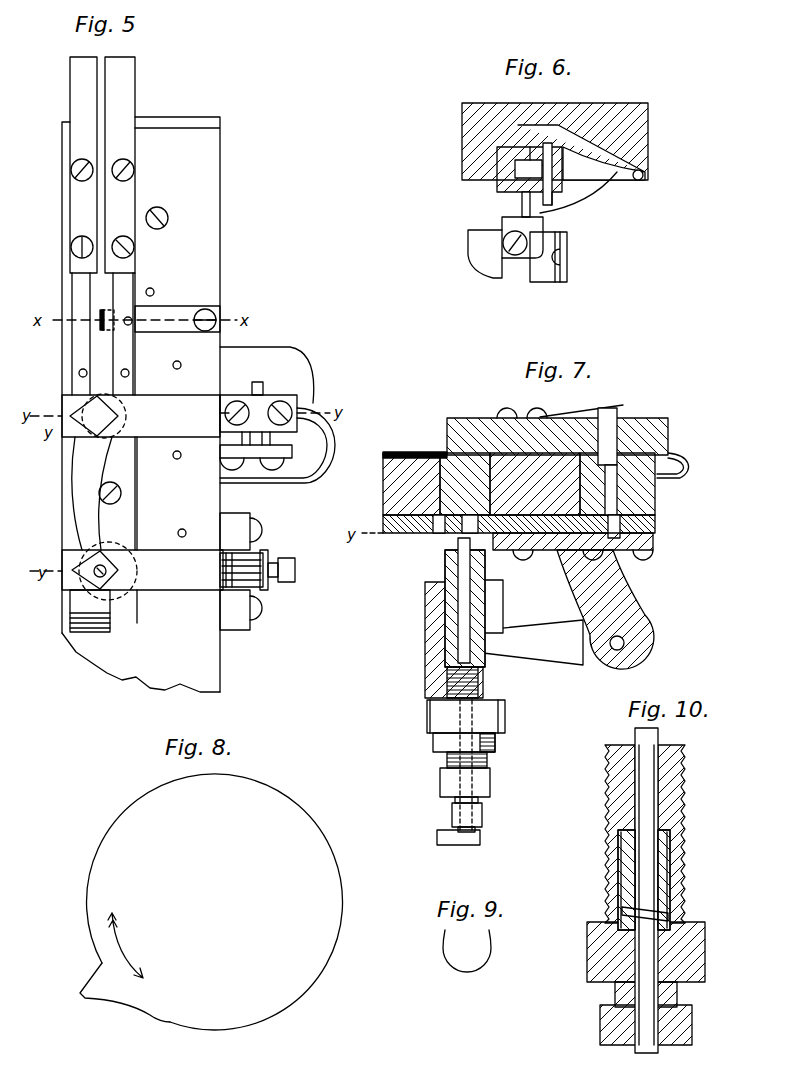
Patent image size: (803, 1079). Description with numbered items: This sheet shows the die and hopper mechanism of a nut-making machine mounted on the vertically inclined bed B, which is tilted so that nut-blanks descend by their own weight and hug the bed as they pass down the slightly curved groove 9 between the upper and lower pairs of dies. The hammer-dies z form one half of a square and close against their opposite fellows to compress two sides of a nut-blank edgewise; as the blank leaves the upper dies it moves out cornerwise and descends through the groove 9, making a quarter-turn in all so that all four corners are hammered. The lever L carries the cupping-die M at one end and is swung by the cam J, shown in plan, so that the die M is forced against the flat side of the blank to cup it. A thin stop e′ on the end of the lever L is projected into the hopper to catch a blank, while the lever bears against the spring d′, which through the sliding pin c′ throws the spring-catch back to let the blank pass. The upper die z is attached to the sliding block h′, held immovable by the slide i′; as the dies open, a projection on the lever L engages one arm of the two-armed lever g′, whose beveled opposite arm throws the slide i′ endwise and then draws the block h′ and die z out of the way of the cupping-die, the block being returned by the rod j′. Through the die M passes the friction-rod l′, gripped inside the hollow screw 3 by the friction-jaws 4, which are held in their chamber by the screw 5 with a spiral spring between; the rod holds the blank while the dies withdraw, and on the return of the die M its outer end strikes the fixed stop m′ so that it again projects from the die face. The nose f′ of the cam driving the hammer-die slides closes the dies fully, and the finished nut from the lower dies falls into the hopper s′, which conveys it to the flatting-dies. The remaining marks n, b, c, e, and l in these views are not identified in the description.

In FIG. 5, the bed B is at (141, 404).
In FIG. 6, the bed B is at (543, 141).
In FIG. 7, the bed B is at (510, 469).
In FIG. 5, the bar / slide n is at (120, 165).
In FIG. 6, the bar / slide n is at (529, 169).
In FIG. 5, the stop pin b is at (107, 332).
In FIG. 5, the pin c is at (131, 326).
In FIG. 5, the hollow screw 3 is at (110, 497).
In FIG. 7, the hollow screw 3 is at (465, 782).
In FIG. 10, the hollow screw 3 is at (652, 952).
In FIG. 5, the pivot pin e is at (99, 572).
In FIG. 5, the sliding block h′ is at (258, 426).
In FIG. 7, the sliding block h′ is at (657, 513).
In FIG. 5, the rod j′ is at (277, 445).
In FIG. 7, the rod j′ is at (415, 444).
In FIG. 5, the groove 9 is at (96, 493).
In FIG. 5, the hopper s′ is at (90, 611).
In FIG. 6, the nose of the cam f′ is at (545, 165).
In FIG. 6, the thin stop e′ is at (529, 204).
In FIG. 6, the sliding pin c′ is at (559, 199).
In FIG. 6, the spring d′ is at (578, 194).
In FIG. 6, the lever L is at (517, 260).
In FIG. 7, the lever L is at (451, 639).
In FIG. 7, the slide i′ is at (607, 461).
In FIG. 7, the hammer-die z is at (432, 535).
In FIG. 7, the cupping-die M is at (448, 608).
In FIG. 7, the rod l is at (464, 600).
In FIG. 7, the two-armed lever g′ is at (568, 609).
In FIG. 7, the screw 5 is at (467, 815).
In FIG. 10, the screw 5 is at (654, 1025).
In FIG. 7, the stop m′ is at (458, 837).
In FIG. 8, the cam J is at (211, 902).
In FIG. 10, the friction-rod l′ is at (646, 890).
In FIG. 10, the friction-jaws 4 is at (656, 873).